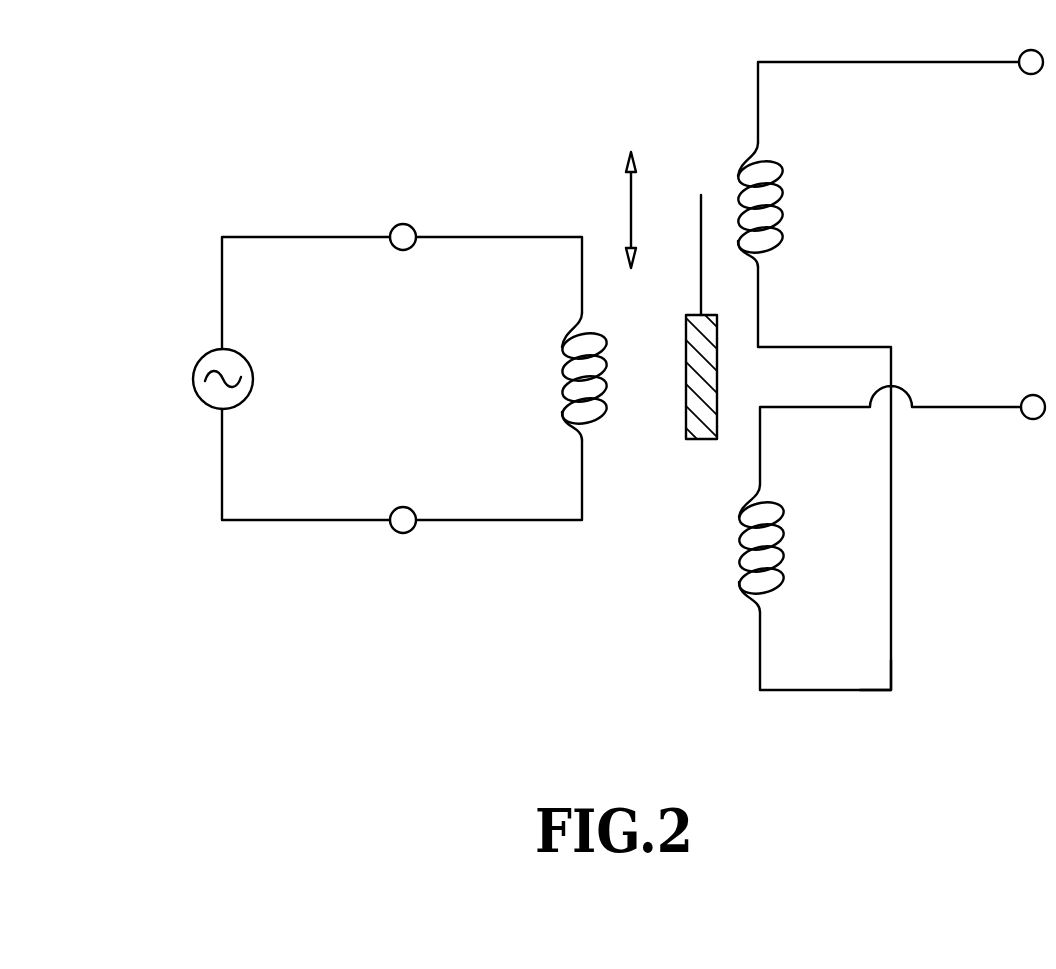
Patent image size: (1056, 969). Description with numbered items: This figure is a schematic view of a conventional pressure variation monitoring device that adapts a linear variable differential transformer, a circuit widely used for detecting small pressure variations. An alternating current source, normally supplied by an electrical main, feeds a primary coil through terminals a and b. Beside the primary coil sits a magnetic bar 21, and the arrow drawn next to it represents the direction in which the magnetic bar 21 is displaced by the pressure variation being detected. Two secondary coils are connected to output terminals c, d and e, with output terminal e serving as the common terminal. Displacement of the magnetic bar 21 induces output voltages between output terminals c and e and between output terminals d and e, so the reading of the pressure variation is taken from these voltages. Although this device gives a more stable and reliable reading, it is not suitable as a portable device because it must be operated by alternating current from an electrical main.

The magnetic bar 21 is at (701, 422).
The terminal a is at (403, 215).
The terminal b is at (403, 542).
The output terminal c is at (1031, 37).
The output terminal d is at (1033, 384).
The output terminal e is at (890, 685).